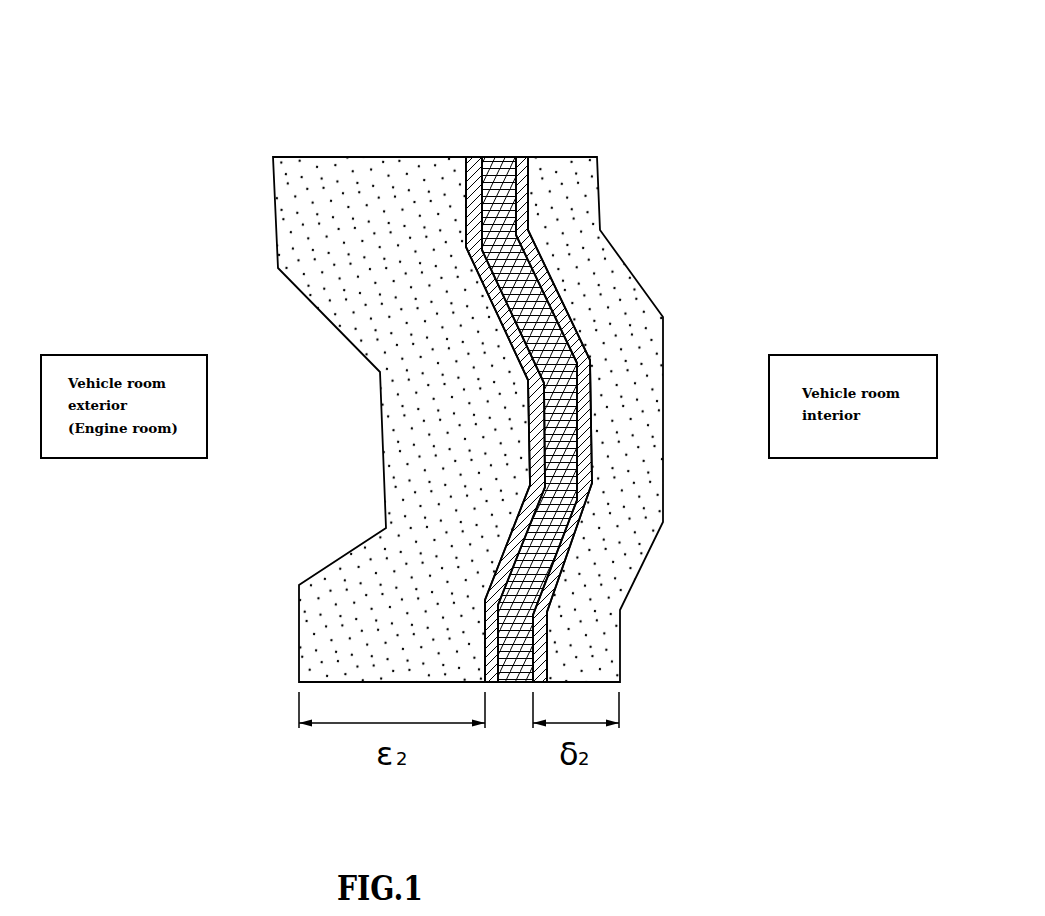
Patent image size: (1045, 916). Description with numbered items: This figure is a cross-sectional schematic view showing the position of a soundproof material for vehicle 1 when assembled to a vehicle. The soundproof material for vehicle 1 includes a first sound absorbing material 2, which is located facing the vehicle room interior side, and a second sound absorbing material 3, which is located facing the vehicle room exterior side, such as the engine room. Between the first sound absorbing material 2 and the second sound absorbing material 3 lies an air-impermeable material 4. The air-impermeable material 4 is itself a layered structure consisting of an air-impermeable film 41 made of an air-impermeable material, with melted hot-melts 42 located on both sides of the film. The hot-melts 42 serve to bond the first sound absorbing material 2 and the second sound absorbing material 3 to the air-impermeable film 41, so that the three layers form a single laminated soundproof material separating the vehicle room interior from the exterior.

The soundproof material for vehicle 1 is at (279, 120).
The first sound absorbing material 2 is at (597, 157).
The second sound absorbing material 3 is at (352, 188).
The air-impermeable material 4 is at (557, 50).
The air-impermeable film 41 is at (499, 170).
The hot-melts 42 is at (473, 170).